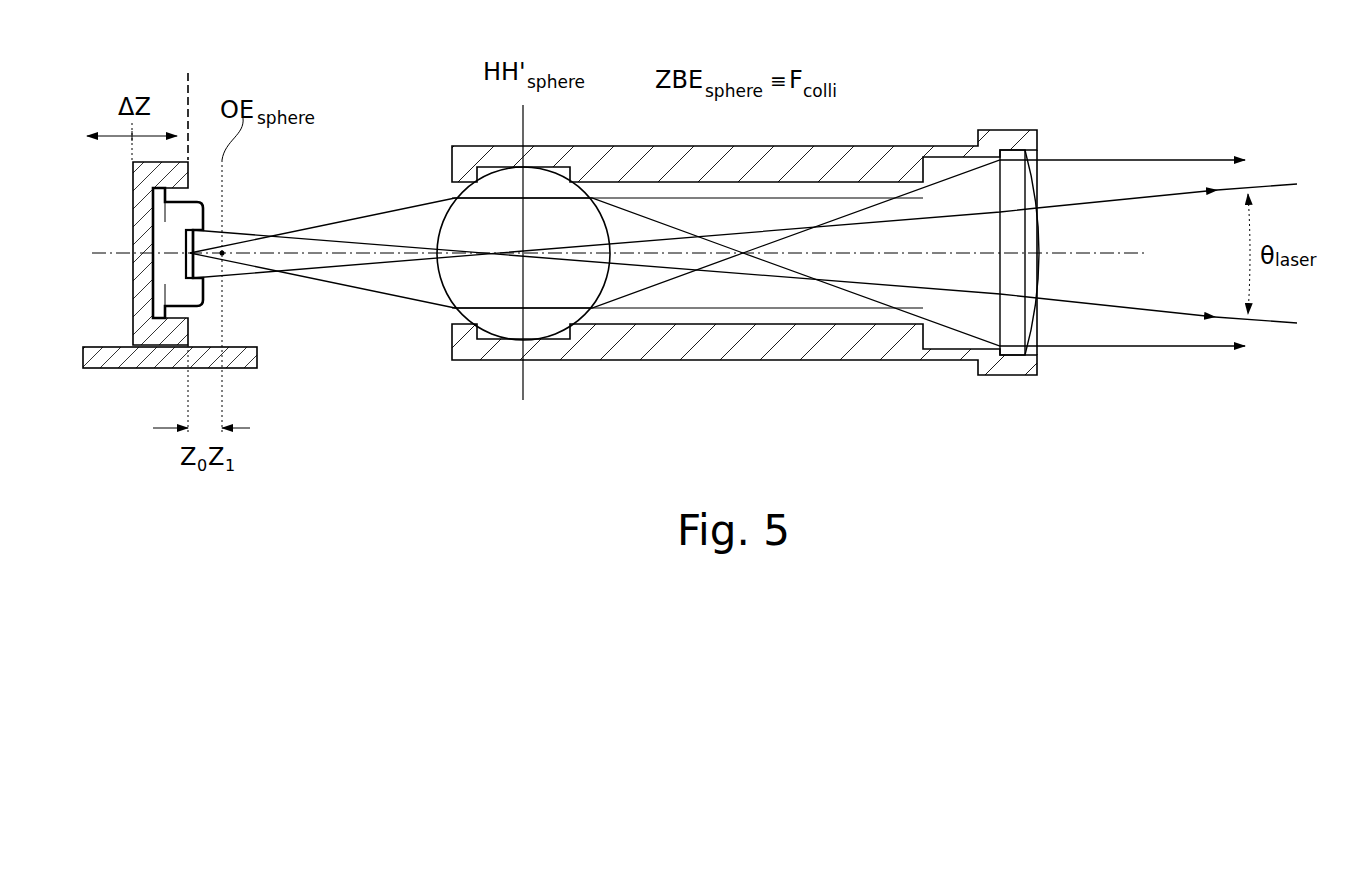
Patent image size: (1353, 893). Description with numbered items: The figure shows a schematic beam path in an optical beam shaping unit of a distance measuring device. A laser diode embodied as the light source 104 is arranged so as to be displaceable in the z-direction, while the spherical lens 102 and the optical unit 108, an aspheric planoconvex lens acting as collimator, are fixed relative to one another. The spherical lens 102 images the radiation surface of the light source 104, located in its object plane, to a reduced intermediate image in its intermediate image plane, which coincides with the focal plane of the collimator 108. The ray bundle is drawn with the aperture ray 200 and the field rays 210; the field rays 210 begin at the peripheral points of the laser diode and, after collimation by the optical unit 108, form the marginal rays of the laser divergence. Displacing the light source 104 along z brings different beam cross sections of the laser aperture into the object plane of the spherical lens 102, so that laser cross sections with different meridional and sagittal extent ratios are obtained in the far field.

The spherical lens 102 is at (532, 325).
The light source 104 is at (175, 268).
The optical unit 108 is at (1040, 332).
The aperture ray 200 is at (1133, 158).
The field ray 210 is at (1253, 188).